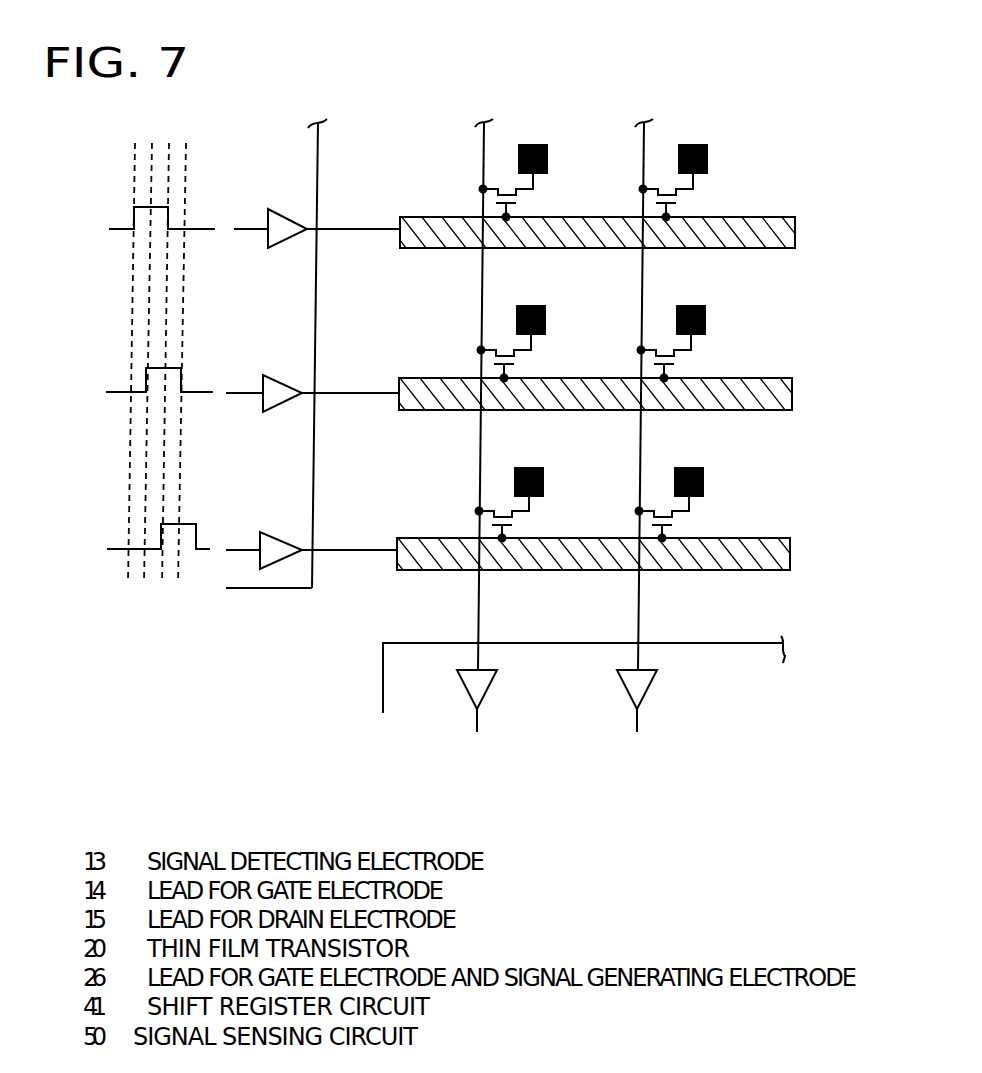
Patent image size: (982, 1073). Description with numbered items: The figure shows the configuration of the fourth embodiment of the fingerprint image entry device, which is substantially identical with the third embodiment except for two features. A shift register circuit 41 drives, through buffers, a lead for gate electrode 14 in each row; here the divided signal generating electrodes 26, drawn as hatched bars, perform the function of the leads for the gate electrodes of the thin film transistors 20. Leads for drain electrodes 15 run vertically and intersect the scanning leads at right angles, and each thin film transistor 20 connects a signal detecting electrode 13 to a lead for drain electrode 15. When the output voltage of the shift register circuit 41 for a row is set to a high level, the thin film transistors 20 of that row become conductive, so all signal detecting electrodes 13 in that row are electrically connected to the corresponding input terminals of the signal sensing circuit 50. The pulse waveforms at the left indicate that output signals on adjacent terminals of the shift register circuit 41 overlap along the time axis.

The signal detecting electrode 13 is at (710, 153).
The lead for gate electrode 14 is at (378, 228).
The lead for drain electrode 15 is at (643, 603).
The thin film transistor 20 is at (692, 197).
The lead for gate electrode and signal generating electrode 26 is at (423, 217).
The shift register circuit 41 is at (303, 159).
The signal sensing circuit 50 is at (752, 655).